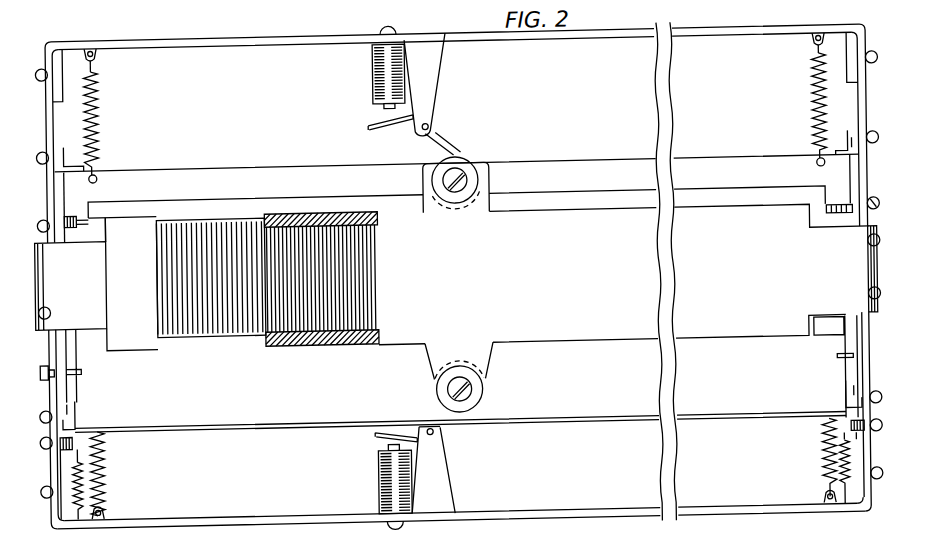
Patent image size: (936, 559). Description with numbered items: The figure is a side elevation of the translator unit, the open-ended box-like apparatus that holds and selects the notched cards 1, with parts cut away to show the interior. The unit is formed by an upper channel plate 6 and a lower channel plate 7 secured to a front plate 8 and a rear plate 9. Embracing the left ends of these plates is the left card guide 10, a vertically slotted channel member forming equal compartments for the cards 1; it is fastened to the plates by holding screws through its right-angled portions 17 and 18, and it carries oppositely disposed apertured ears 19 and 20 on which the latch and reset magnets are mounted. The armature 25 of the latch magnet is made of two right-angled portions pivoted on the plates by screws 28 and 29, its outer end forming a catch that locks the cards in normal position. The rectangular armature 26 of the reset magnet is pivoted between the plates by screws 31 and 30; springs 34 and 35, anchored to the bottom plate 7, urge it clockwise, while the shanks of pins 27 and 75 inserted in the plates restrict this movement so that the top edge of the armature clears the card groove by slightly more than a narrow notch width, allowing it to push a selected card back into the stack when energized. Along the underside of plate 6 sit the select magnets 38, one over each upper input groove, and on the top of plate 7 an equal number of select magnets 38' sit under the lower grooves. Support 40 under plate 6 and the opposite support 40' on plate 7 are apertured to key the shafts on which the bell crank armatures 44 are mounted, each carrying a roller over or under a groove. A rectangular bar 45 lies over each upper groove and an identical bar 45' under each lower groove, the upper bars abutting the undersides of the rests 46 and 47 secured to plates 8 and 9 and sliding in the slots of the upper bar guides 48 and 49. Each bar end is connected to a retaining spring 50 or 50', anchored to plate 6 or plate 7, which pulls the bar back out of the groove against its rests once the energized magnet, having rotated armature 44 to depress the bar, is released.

The cards 1 is at (200, 334).
The upper channel plate 6 is at (174, 43).
The lower channel plate 7 is at (180, 529).
The front plate 8 is at (858, 104).
The rear plate 9 is at (45, 117).
The left card guide 10 is at (572, 350).
The right-angled portion 17 is at (873, 215).
The right-angled portion 18 is at (40, 287).
The supporting ear 19 is at (490, 212).
The supporting ear 20 is at (481, 404).
The armature 25 is at (178, 206).
The armature 26 is at (709, 422).
The pin 27 is at (866, 348).
The screw 28 is at (862, 247).
The screw 29 is at (47, 224).
The screw 30 is at (876, 432).
The screw 31 is at (46, 437).
The spring 34 is at (852, 502).
The spring 35 is at (55, 463).
The select magnet 38 is at (371, 67).
The select magnet 38' is at (375, 487).
The support 40 is at (419, 85).
The support 40' is at (432, 470).
The bell crank armature 44 is at (443, 150).
The bar 45 is at (678, 181).
The bar 45' is at (826, 354).
The rest 46 is at (838, 166).
The rest 47 is at (68, 172).
The upper bar guide 48 is at (847, 200).
The upper bar guide 49 is at (62, 196).
The retaining spring 50 is at (455, 108).
The retaining spring 50' is at (463, 467).
The pin 75 is at (50, 361).